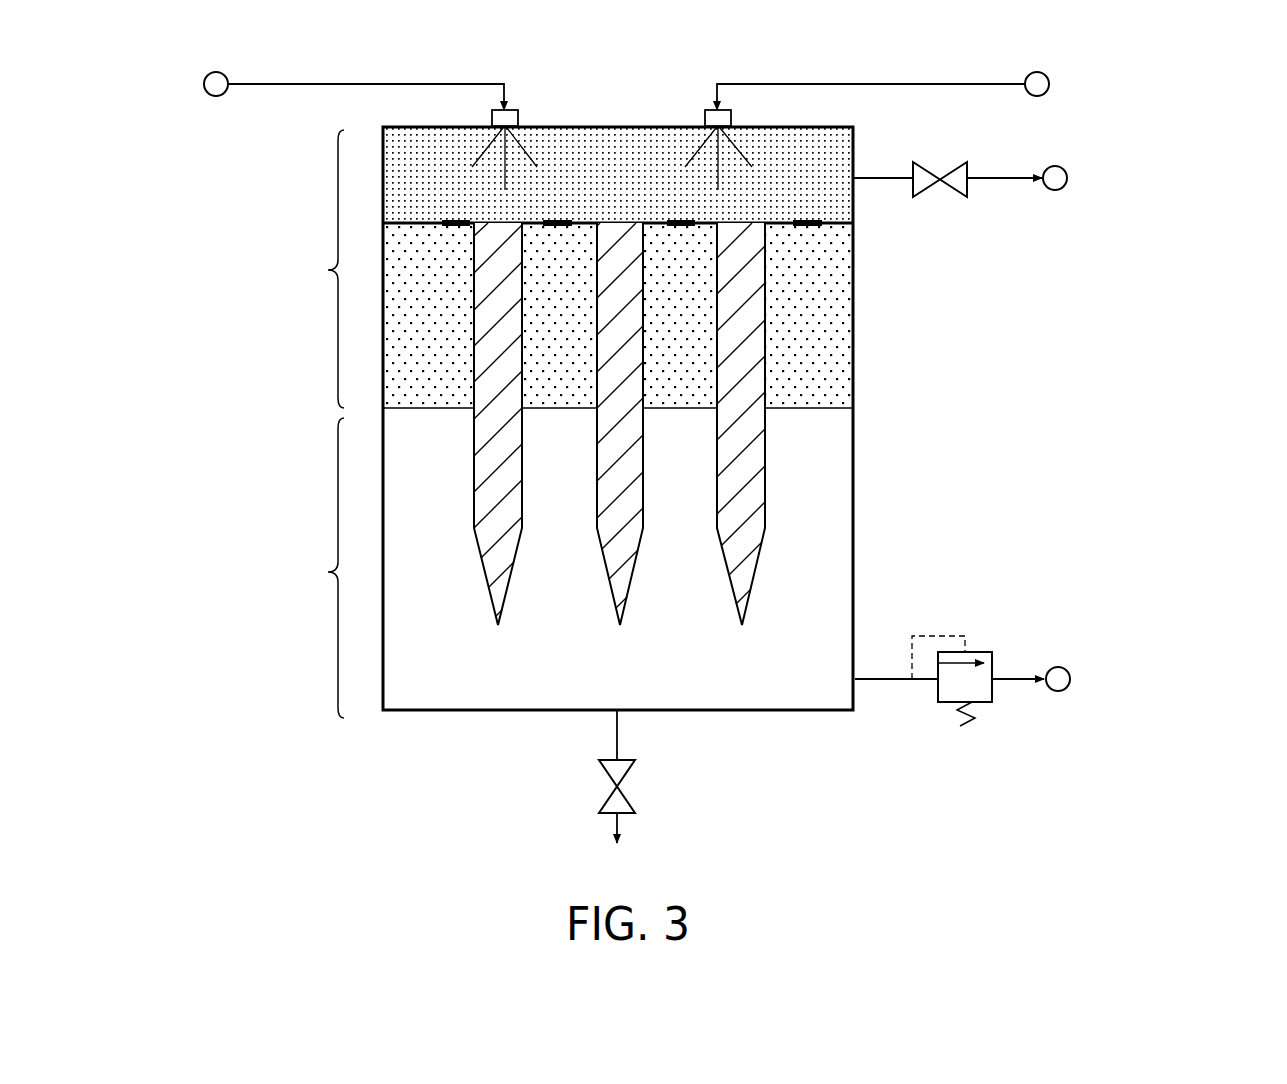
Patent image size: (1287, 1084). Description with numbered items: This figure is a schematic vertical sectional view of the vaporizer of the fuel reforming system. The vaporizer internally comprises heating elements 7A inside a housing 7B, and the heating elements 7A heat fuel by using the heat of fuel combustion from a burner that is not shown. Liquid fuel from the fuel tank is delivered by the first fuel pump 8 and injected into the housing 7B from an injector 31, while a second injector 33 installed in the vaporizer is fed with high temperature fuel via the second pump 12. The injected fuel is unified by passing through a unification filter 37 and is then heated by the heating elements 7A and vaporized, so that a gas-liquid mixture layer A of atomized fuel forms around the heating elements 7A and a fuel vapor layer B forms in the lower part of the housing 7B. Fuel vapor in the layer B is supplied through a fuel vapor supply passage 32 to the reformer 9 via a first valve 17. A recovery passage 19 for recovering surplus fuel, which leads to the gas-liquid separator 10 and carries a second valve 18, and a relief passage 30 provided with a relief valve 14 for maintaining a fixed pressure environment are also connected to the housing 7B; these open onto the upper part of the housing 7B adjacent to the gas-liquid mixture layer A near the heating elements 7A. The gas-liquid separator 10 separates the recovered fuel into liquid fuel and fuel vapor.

The heating elements 7A is at (765, 510).
The housing 7B is at (855, 573).
The first fuel pump 8 is at (214, 97).
The reformer 9 is at (621, 842).
The gas-liquid separator 10 is at (1055, 191).
The second fuel pump 12 is at (1040, 96).
The relief valve 14 is at (992, 697).
The first valve 17 is at (598, 778).
The second valve 18 is at (948, 192).
The recovery passage 19 is at (1017, 181).
The relief passage 30 is at (885, 681).
The injector 31 is at (518, 119).
The fuel vapor supply passage 32 is at (618, 738).
The second injector 33 is at (731, 116).
The unification filter 37 is at (813, 226).
The gas-liquid mixture layer A is at (321, 269).
The fuel vapor layer B is at (321, 568).